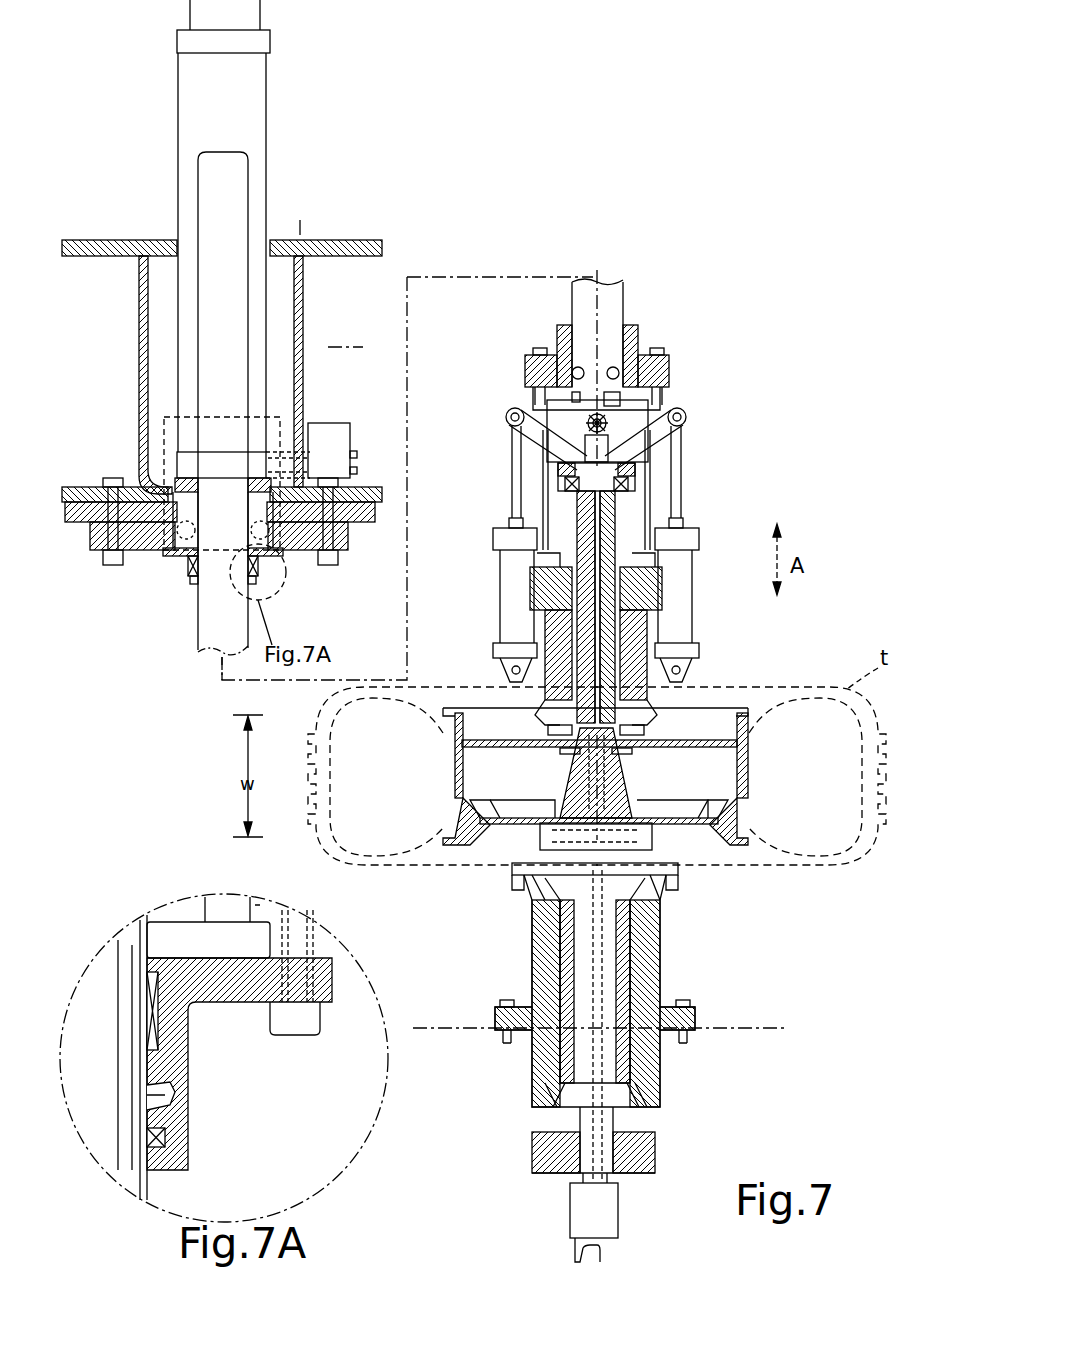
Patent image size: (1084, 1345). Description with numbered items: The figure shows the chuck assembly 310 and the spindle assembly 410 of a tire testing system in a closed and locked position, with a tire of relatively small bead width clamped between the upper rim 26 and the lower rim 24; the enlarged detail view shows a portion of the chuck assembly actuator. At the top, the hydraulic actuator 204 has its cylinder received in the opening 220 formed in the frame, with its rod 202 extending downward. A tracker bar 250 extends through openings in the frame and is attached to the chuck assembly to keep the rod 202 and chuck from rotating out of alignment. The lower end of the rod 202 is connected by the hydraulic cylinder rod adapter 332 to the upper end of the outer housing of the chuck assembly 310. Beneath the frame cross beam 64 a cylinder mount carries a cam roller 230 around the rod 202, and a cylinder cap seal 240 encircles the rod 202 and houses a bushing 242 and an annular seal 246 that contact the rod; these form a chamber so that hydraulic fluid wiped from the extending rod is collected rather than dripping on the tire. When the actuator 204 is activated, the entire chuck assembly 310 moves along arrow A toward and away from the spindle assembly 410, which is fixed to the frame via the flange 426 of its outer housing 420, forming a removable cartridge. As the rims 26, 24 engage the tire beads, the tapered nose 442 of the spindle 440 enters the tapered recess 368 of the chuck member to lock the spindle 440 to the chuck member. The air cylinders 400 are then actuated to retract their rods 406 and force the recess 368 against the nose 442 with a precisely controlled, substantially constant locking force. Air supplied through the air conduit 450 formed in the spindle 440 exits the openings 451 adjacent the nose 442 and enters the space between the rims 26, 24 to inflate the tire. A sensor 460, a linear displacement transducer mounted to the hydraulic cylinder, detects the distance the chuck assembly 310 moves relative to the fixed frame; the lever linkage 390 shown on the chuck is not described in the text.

In FIG. 7, the hydraulic actuator 204 is at (156, 99).
In FIG. 7, the frame cross beam 64 is at (382, 225).
In FIG. 7, the opening 220 is at (270, 242).
In FIG. 7A, the opening 220 is at (340, 955).
In FIG. 7, the tracker bar 250 is at (222, 333).
In FIG. 7, the cam roller 230 is at (187, 505).
In FIG. 7, the bushing 242 is at (190, 558).
In FIG. 7A, the bushing 242 is at (157, 1035).
In FIG. 7, the annular seal 246 is at (188, 580).
In FIG. 7A, the annular seal 246 is at (165, 1138).
In FIG. 7, the cylinder cap seal 240 is at (258, 576).
In FIG. 7A, the cylinder cap seal 240 is at (232, 1107).
In FIG. 7, the rod 202 is at (615, 309).
In FIG. 7, the hydraulic cylinder rod adapter 332 is at (638, 336).
In FIG. 7, the lever mechanism 390 is at (658, 428).
In FIG. 7, the chuck assembly 310 is at (740, 434).
In FIG. 7, the rods 406 is at (682, 486).
In FIG. 7, the sensor 460 is at (585, 514).
In FIG. 7, the air cylinders 400 is at (506, 616).
In FIG. 7, the upper rim 26 is at (700, 742).
In FIG. 7, the lower rim 24 is at (720, 816).
In FIG. 7, the tapered recess 368 is at (585, 780).
In FIG. 7, the tapered nose 442 is at (550, 772).
In FIG. 7, the openings 451 is at (610, 822).
In FIG. 7, the spindle 440 is at (578, 980).
In FIG. 7, the air conduit 450 is at (595, 962).
In FIG. 7, the outer housing 420 is at (535, 990).
In FIG. 7, the spindle assembly 410 is at (733, 955).
In FIG. 7, the flange 426 is at (690, 1020).